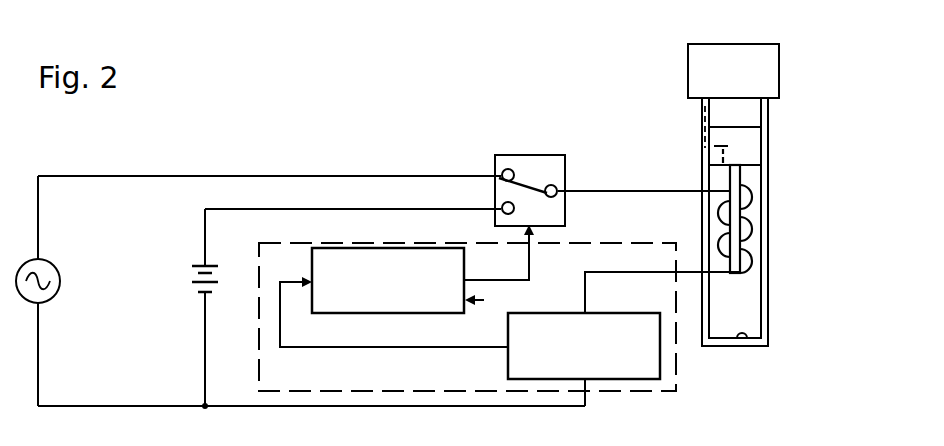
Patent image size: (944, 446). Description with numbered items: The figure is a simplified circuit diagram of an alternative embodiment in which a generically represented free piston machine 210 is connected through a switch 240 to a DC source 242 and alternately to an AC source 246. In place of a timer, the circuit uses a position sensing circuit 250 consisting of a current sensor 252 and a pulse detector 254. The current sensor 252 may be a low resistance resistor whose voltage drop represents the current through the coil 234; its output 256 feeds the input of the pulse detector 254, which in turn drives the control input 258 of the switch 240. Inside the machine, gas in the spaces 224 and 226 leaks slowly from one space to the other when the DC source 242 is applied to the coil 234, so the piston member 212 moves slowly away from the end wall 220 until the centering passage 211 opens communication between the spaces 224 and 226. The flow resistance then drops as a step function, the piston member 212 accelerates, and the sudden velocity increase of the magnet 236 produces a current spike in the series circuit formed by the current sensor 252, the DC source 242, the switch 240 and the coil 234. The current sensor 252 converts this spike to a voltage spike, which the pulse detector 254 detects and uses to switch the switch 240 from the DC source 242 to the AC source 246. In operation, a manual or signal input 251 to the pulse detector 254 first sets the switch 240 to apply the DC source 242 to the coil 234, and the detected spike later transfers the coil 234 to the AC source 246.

The free piston machine 210 is at (648, 113).
The centering passage 211 is at (730, 146).
The piston member 212 is at (735, 176).
The end wall 220 is at (745, 343).
The space 224 is at (748, 113).
The space 226 is at (746, 305).
The coil 234 is at (718, 212).
The magnet 236 is at (737, 216).
The switch 240 is at (535, 155).
The DC source 242 is at (198, 290).
The AC source 246 is at (53, 266).
The position sensing circuit 250 is at (676, 378).
The manual or signal input 251 is at (484, 300).
The current sensor 252 is at (508, 365).
The pulse detector 254 is at (404, 248).
The output 256 is at (356, 348).
The control input 258 is at (529, 262).